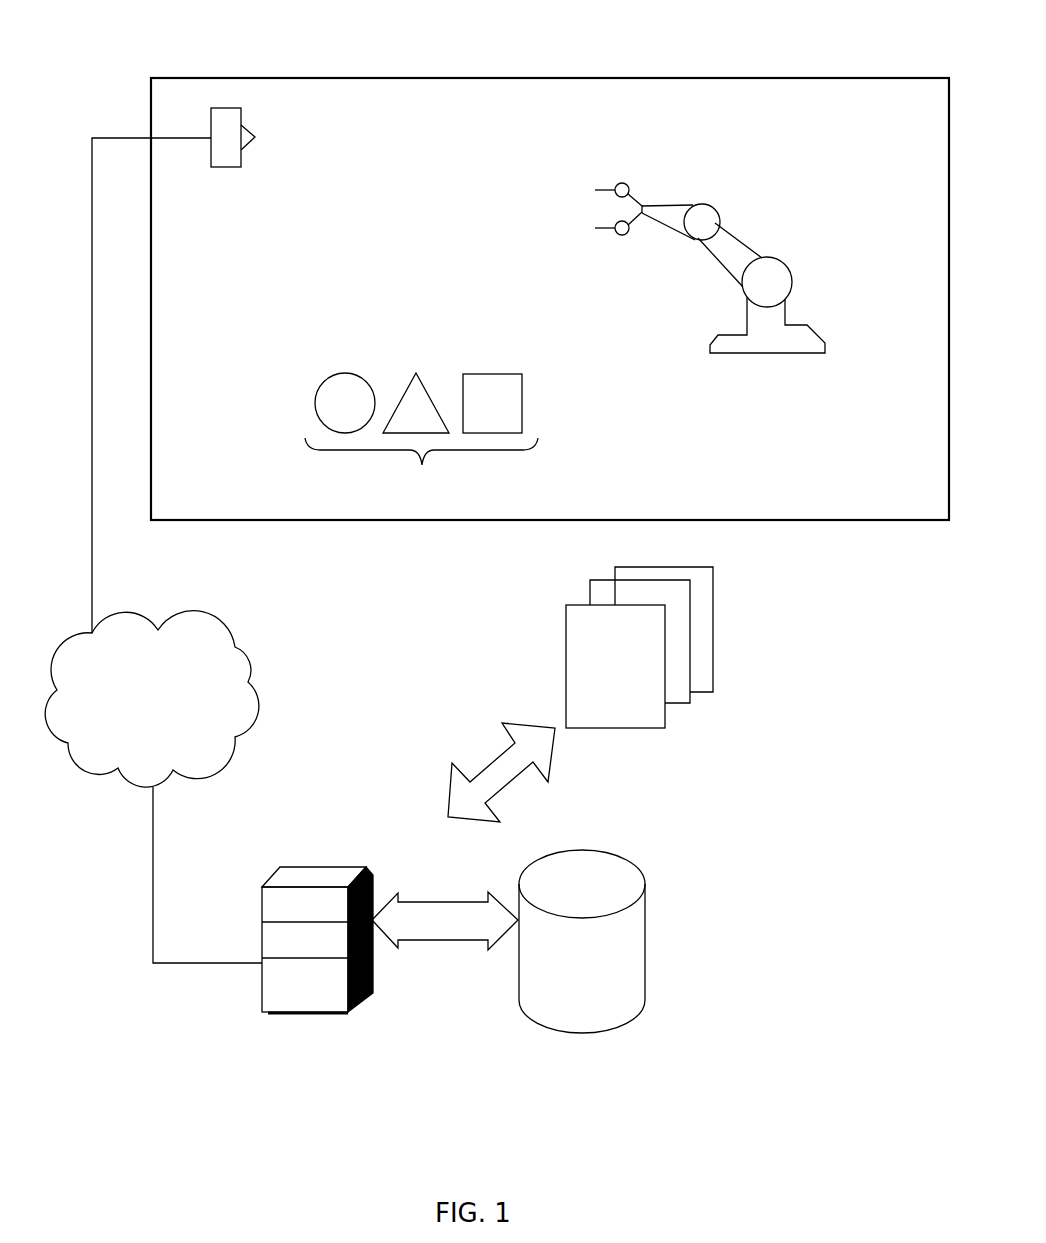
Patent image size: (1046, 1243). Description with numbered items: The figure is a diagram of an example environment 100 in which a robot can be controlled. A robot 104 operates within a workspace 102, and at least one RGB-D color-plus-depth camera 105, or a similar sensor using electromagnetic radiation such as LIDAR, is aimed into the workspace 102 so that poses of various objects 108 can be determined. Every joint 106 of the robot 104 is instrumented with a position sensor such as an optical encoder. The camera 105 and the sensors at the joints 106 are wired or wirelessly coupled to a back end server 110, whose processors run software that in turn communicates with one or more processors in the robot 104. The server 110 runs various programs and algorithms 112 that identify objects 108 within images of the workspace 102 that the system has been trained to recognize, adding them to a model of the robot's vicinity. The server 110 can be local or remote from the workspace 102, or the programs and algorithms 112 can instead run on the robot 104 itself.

The environment 100 is at (656, 40).
The workspace 102 is at (549, 116).
The robot 104 is at (745, 253).
The RGB-D camera 105 is at (232, 162).
The joint 106 is at (708, 195).
The objects 108 is at (421, 438).
The server 110 is at (373, 953).
The programs and algorithms 112 is at (238, 657).